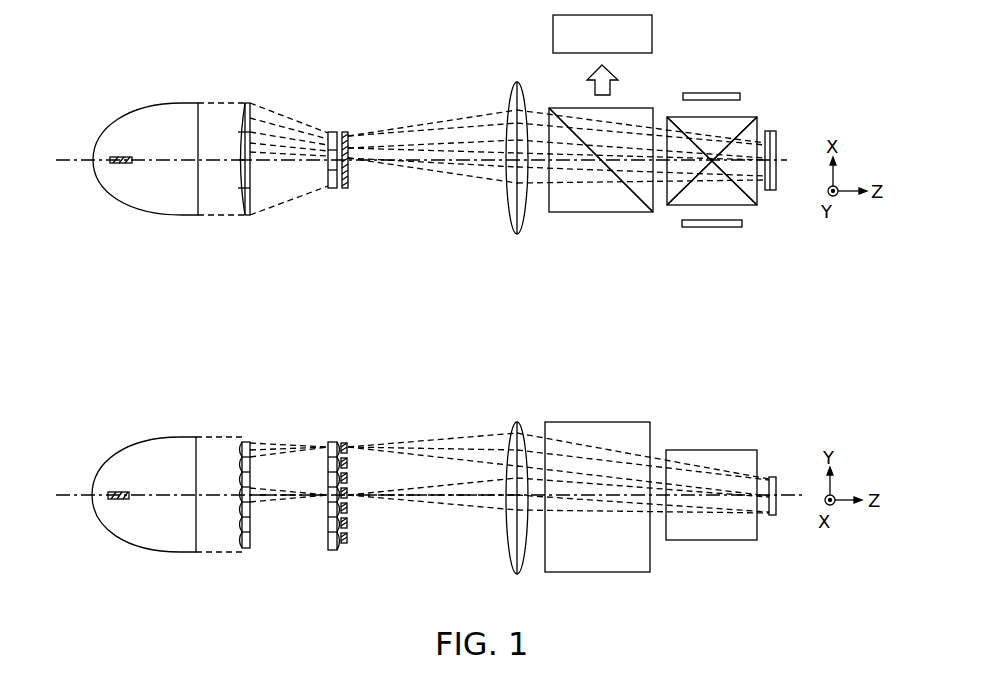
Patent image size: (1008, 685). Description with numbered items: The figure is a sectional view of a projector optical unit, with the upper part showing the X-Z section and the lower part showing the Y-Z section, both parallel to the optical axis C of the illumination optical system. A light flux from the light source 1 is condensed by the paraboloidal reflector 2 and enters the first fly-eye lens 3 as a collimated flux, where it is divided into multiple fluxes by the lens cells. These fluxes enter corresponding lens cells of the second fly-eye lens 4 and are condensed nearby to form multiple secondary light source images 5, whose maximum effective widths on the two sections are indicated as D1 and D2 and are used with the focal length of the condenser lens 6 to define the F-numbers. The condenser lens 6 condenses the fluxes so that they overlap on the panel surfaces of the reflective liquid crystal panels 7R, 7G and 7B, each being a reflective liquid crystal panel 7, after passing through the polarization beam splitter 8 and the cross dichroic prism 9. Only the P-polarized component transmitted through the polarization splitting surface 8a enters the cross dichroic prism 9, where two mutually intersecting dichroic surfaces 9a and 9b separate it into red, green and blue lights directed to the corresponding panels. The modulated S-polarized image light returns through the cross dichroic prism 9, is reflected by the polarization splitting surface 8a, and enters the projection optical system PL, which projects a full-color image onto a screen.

The light source 1 is at (122, 155).
The paraboloidal reflector 2 is at (115, 197).
The first fly-eye lens 3 is at (247, 225).
The second fly-eye lens 4 is at (329, 197).
The secondary light source images 5 is at (345, 197).
The condenser lens 6 is at (517, 242).
The reflective liquid crystal panel 7 is at (774, 197).
The reflective liquid crystal panel for blue light 7B is at (711, 86).
The reflective liquid crystal panel for red light 7R is at (712, 243).
The reflective liquid crystal panel for green light 7G is at (789, 160).
The polarization beam splitter 8 is at (599, 228).
The polarization splitting surface 8a is at (640, 200).
The cross dichroic prism 9 is at (692, 215).
The dichroic surface 9a is at (742, 188).
The dichroic surface 9b is at (738, 130).
The projection optical system PL is at (652, 40).
The optical axis C is at (68, 173).
The maximum effective width on X-Z section D1 is at (355, 183).
The maximum effective width on Y-Z section D2 is at (355, 449).